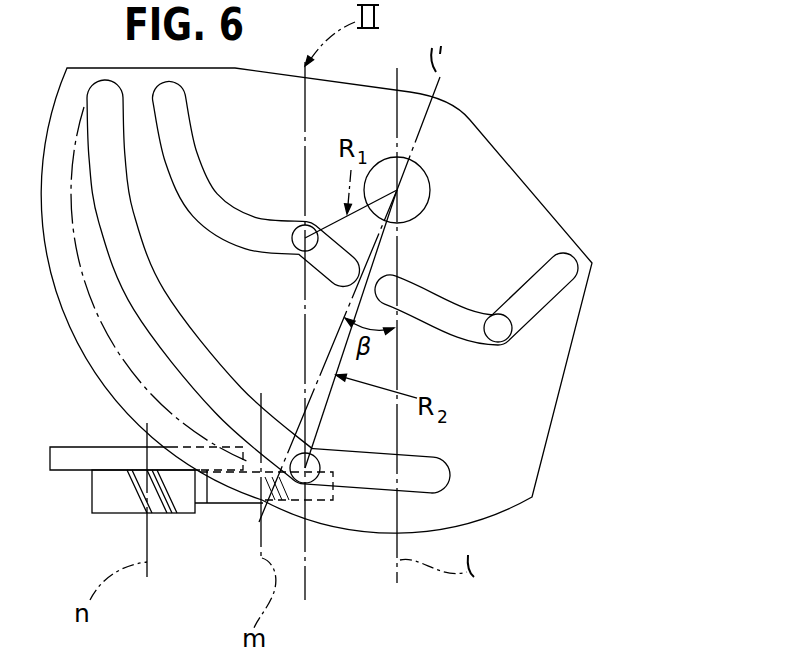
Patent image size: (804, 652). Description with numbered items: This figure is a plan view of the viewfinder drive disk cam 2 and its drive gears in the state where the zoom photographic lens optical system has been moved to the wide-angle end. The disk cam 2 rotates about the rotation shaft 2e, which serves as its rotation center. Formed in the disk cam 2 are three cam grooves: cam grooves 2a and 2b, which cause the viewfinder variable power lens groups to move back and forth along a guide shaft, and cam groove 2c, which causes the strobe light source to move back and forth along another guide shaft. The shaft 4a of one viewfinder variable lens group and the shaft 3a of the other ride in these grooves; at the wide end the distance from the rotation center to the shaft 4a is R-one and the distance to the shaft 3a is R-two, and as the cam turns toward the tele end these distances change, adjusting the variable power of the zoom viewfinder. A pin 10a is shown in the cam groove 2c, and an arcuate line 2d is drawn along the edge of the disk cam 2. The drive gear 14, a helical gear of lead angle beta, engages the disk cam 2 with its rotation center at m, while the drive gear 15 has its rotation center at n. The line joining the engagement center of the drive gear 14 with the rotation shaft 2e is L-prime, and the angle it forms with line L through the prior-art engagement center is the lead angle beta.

The disk cam 2 is at (527, 452).
The cam groove 2a is at (207, 347).
The cam groove 2b is at (197, 143).
The cam groove 2c is at (445, 305).
The arcuate edge line 2d is at (80, 312).
The rotation shaft 2e is at (427, 175).
The shaft 3a is at (317, 453).
The shaft 4a is at (303, 226).
The pin 10a is at (499, 333).
The drive gear 14 is at (223, 493).
The drive gear 15 is at (100, 487).